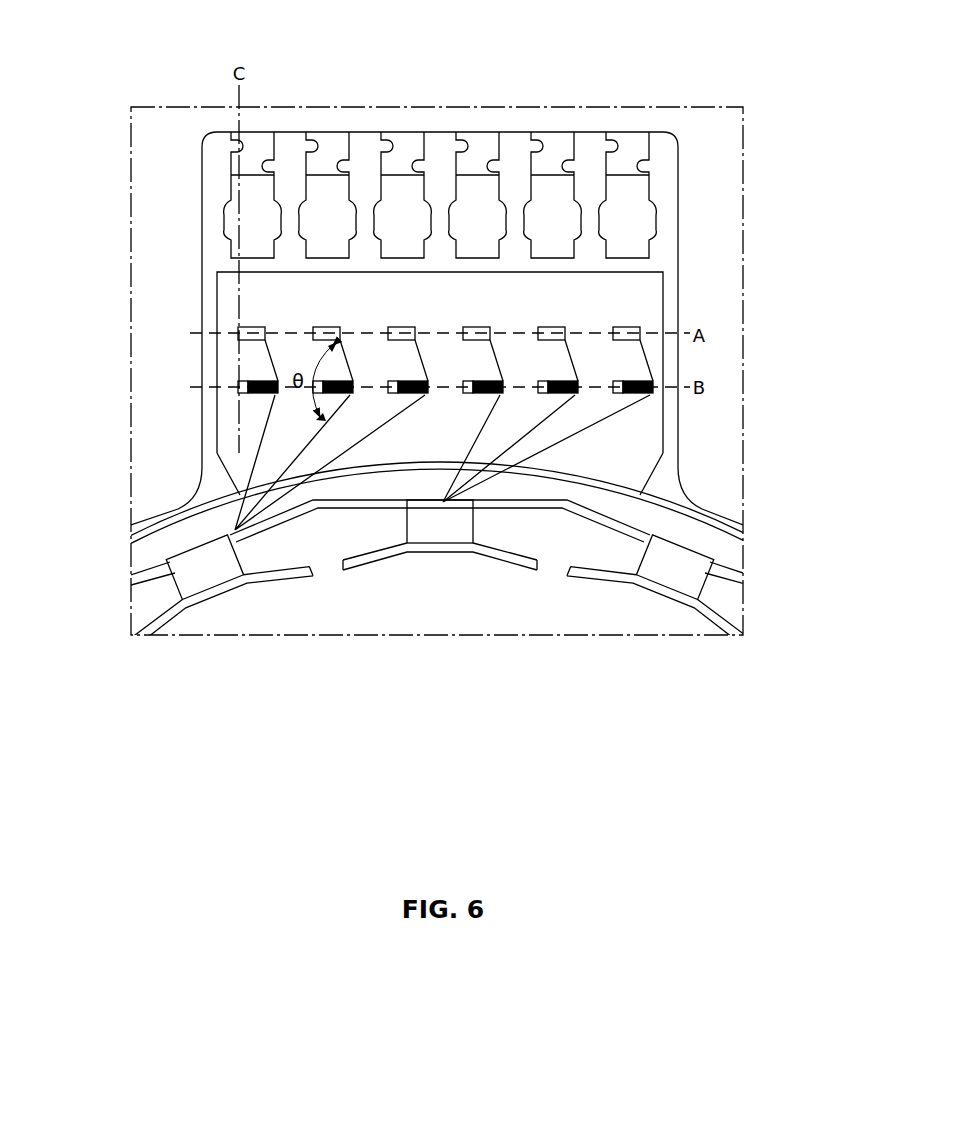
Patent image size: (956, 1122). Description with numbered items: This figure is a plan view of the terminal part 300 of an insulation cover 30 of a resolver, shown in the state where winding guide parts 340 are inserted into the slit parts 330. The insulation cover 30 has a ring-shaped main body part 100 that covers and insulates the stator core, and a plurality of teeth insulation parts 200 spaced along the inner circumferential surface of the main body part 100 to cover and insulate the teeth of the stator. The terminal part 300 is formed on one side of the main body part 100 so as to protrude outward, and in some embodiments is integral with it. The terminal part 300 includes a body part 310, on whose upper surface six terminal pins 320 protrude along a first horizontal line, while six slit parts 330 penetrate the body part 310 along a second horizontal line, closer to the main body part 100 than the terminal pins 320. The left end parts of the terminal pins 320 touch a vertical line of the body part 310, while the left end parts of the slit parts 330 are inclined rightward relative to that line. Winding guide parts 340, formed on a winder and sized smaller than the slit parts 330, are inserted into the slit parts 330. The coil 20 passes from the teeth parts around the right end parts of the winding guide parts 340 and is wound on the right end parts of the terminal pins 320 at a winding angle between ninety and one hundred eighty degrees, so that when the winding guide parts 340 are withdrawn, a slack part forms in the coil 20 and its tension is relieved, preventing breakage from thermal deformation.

The insulation cover 30 is at (368, 27).
The terminal part 300 is at (692, 173).
The body part 310 is at (640, 292).
The terminal pin 320 is at (240, 333).
The slit part 330 is at (240, 386).
The winding guide part 340 is at (262, 394).
The coil 20 is at (333, 457).
The main body part 100 is at (460, 576).
The teeth insulation part 200 is at (220, 597).